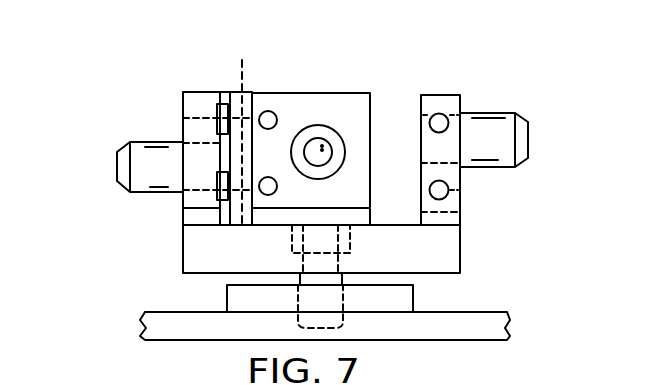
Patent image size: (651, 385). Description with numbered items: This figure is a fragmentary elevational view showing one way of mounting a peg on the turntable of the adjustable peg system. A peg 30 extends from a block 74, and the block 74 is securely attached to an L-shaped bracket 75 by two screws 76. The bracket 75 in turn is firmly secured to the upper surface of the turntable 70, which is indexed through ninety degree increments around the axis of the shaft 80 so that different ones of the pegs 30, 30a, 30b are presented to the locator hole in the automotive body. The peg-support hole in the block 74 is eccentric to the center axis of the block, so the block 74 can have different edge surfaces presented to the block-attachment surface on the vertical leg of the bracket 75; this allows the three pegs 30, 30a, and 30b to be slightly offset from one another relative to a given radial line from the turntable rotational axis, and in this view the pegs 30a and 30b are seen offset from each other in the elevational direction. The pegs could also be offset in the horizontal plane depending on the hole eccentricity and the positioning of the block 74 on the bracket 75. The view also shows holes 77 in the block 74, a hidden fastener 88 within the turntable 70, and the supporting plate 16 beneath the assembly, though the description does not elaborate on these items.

The base plate / table 16 is at (510, 325).
The peg 30 is at (336, 138).
The peg 30a is at (128, 196).
The peg 30b is at (515, 168).
The turntable 70 is at (460, 246).
The block 74 is at (347, 100).
The L-shaped bracket 75 is at (237, 150).
The screws 76 is at (243, 92).
The screw hole 77 is at (270, 111).
The shaft 80 is at (372, 300).
The hidden fastening screw 88 is at (350, 228).